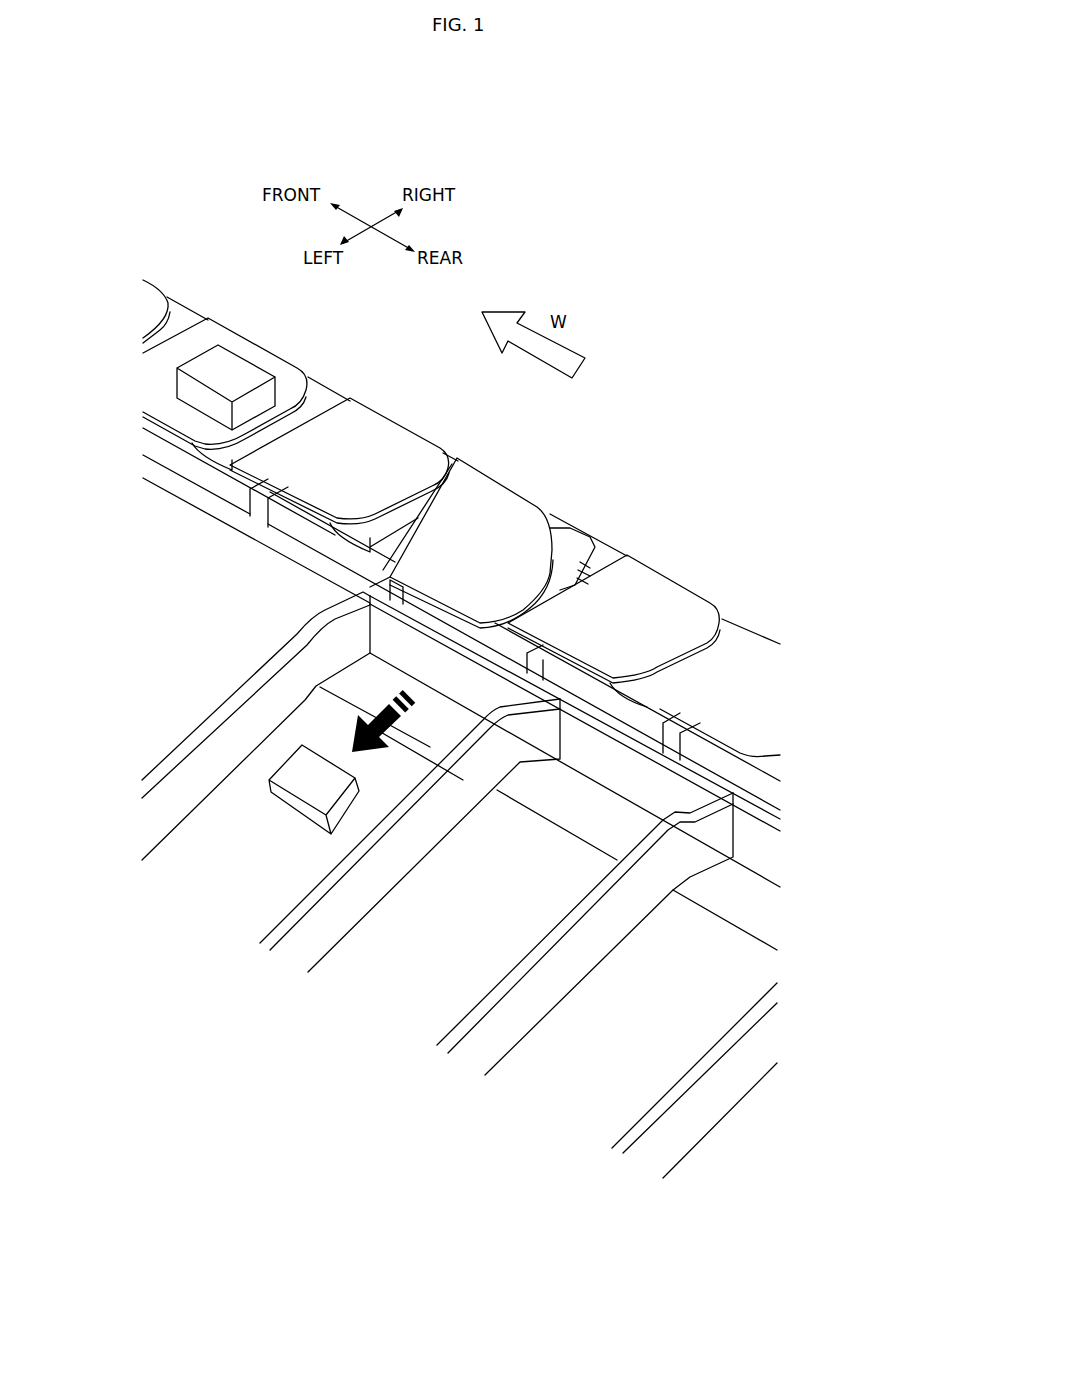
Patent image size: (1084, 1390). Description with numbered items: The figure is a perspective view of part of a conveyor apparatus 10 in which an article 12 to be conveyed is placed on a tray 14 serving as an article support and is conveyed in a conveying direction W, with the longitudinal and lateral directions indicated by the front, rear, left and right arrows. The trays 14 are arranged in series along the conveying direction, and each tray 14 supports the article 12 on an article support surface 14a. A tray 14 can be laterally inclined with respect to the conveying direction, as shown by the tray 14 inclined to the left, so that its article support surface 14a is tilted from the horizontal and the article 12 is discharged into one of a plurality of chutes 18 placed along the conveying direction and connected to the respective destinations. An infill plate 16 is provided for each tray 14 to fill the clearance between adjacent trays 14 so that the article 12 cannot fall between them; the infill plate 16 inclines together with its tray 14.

The conveyor apparatus 10 is at (168, 212).
The article 12 is at (228, 368).
The tray 14 is at (421, 425).
The article support surface 14a is at (363, 427).
The infill plate 16 is at (738, 637).
The chute 18 is at (405, 978).